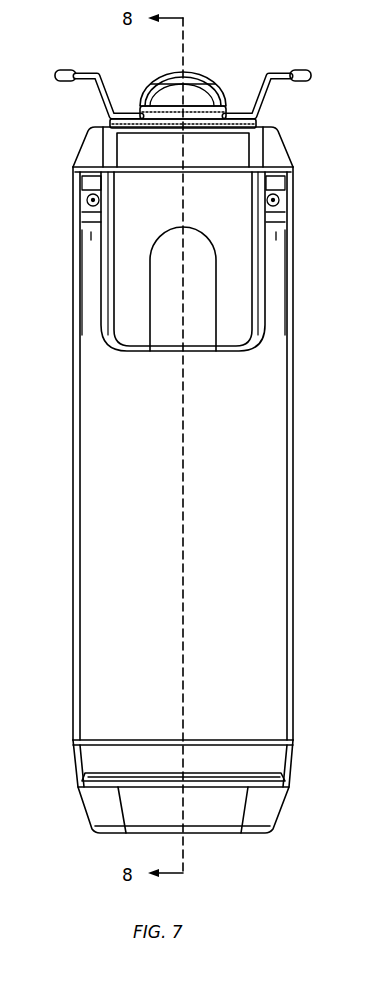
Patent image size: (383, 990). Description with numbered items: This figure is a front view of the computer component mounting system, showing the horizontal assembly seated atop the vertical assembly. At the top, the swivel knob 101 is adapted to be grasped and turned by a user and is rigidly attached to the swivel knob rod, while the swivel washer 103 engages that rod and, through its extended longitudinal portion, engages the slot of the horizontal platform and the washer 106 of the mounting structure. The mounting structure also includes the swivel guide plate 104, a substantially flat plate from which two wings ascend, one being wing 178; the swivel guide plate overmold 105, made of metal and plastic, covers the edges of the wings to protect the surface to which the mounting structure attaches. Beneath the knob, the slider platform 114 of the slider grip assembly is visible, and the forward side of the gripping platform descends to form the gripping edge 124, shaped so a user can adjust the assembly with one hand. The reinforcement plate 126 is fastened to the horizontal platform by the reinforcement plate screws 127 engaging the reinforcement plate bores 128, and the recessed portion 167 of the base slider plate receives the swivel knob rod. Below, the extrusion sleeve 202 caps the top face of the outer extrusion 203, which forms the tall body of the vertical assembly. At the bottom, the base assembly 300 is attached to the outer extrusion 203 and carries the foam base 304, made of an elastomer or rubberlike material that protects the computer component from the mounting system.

The swivel knob 101 is at (203, 98).
The swivel washer 103 is at (158, 103).
The swivel guide plate 104 is at (233, 120).
The swivel guide plate overmold 105 is at (296, 72).
The washer 106 is at (131, 128).
The slider platform 114 is at (227, 158).
The gripping edge 124 is at (233, 295).
The reinforcement plate 126 is at (278, 190).
The reinforcement plate screws 127 is at (279, 201).
The reinforcement plate bores 128 is at (279, 215).
The recessed portion 167 is at (290, 157).
The wing 178 is at (253, 110).
The extrusion sleeve 202 is at (272, 238).
The outer extrusion 203 is at (258, 572).
The base assembly 300 is at (263, 806).
The foam base 304 is at (238, 770).